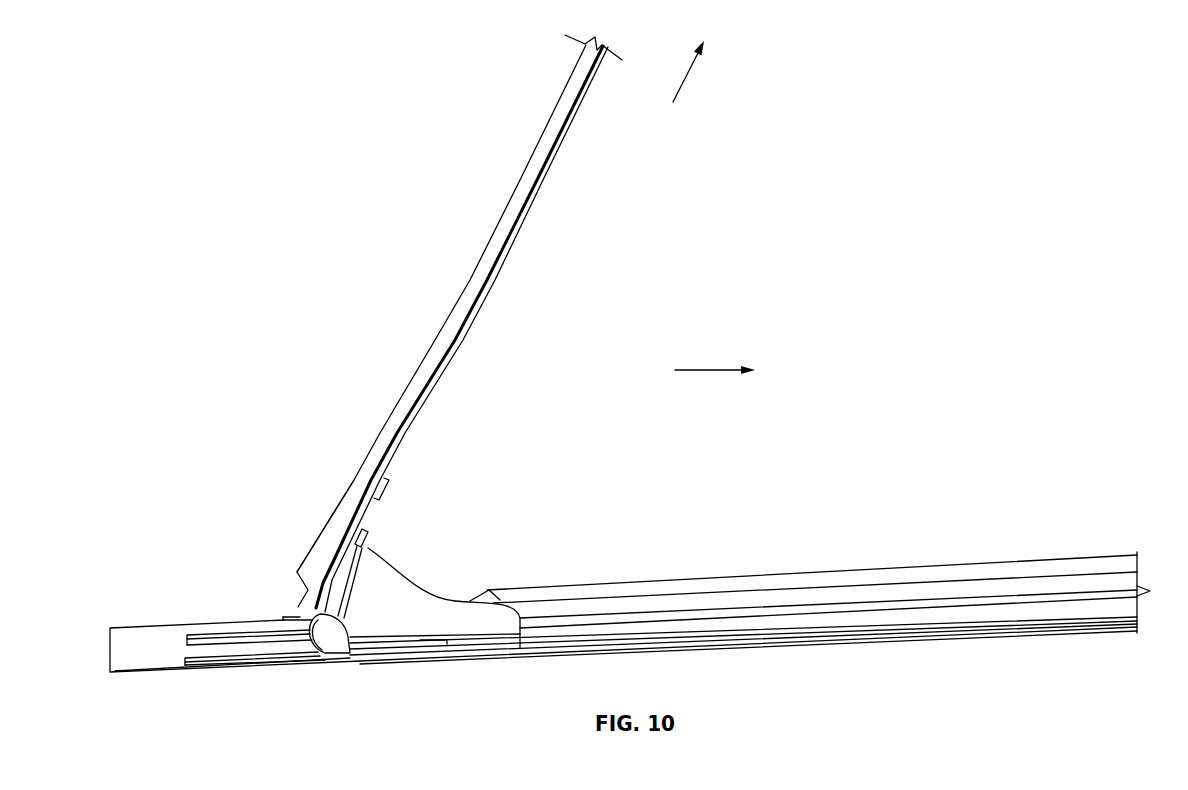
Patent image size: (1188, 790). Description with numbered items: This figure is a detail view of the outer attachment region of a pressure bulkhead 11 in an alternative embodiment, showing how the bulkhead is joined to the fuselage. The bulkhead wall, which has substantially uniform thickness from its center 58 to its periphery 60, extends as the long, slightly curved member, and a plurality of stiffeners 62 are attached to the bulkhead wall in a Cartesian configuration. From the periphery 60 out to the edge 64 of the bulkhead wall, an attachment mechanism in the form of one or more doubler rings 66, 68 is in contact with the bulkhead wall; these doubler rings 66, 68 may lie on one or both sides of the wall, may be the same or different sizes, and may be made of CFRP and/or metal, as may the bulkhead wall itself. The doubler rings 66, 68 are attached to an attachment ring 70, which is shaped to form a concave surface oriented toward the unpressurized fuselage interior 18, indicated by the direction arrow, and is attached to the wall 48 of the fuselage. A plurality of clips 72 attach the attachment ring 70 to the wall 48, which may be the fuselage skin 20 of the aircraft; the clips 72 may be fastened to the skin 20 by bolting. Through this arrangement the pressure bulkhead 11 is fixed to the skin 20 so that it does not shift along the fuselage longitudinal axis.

The pressure bulkhead 11 is at (477, 363).
The unpressurized fuselage interior 18 is at (703, 370).
The fuselage skin 20 is at (933, 635).
The wall 48 is at (118, 648).
The center 58 is at (698, 73).
The periphery 60 is at (334, 546).
The stiffeners 62 is at (540, 156).
The edge 64 is at (297, 614).
The doubler ring 66 is at (383, 491).
The doubler ring 68 is at (366, 541).
The attachment ring 70 is at (315, 643).
The clips 72 is at (401, 598).